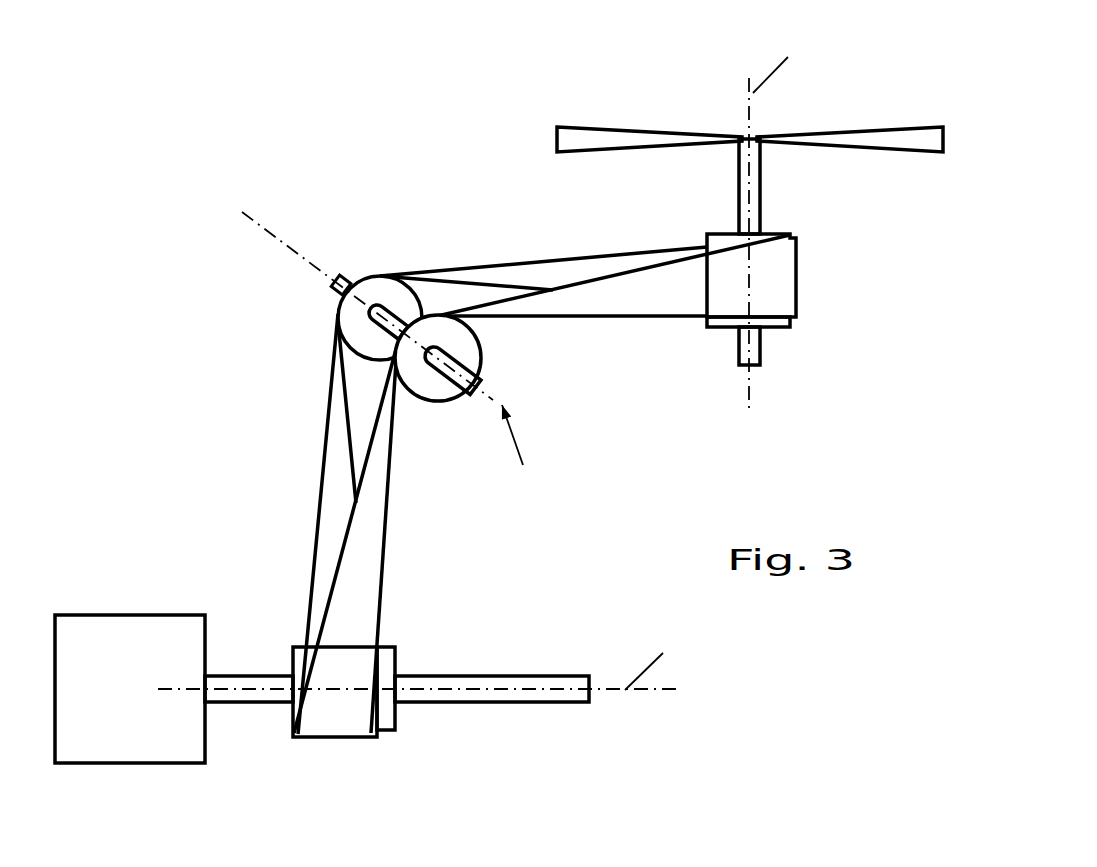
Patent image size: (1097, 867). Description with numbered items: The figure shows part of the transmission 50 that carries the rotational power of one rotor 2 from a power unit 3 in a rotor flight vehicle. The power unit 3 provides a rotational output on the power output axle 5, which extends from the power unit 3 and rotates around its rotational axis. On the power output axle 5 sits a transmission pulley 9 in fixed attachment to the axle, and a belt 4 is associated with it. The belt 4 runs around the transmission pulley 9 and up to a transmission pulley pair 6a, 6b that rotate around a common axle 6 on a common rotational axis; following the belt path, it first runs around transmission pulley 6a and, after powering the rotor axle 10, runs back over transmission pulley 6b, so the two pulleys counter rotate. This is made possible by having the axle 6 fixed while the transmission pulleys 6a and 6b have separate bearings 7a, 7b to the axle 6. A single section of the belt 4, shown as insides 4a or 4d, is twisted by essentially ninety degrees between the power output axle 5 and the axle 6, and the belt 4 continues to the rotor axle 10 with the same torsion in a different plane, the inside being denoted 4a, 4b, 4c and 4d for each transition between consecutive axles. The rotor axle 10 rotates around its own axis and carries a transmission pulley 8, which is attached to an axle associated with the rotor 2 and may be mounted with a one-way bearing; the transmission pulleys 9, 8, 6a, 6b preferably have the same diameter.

The transmission 50 is at (282, 167).
The rotor 2 is at (582, 138).
The power unit 3 is at (130, 689).
The belt 4 is at (320, 530).
The inside of belt 4a is at (325, 567).
The inside of belt 4b is at (637, 263).
The inside of belt 4c is at (612, 302).
The inside of belt 4d is at (363, 520).
The power output axle 5 is at (253, 675).
The axle 6 is at (342, 276).
The transmission pulley 6a is at (377, 283).
The transmission pulley 6b is at (463, 352).
The bearing 7a is at (373, 326).
The bearing 7b is at (432, 363).
The transmission pulley 8 is at (797, 320).
The transmission pulley 9 is at (397, 733).
The rotor axle 10 is at (762, 203).